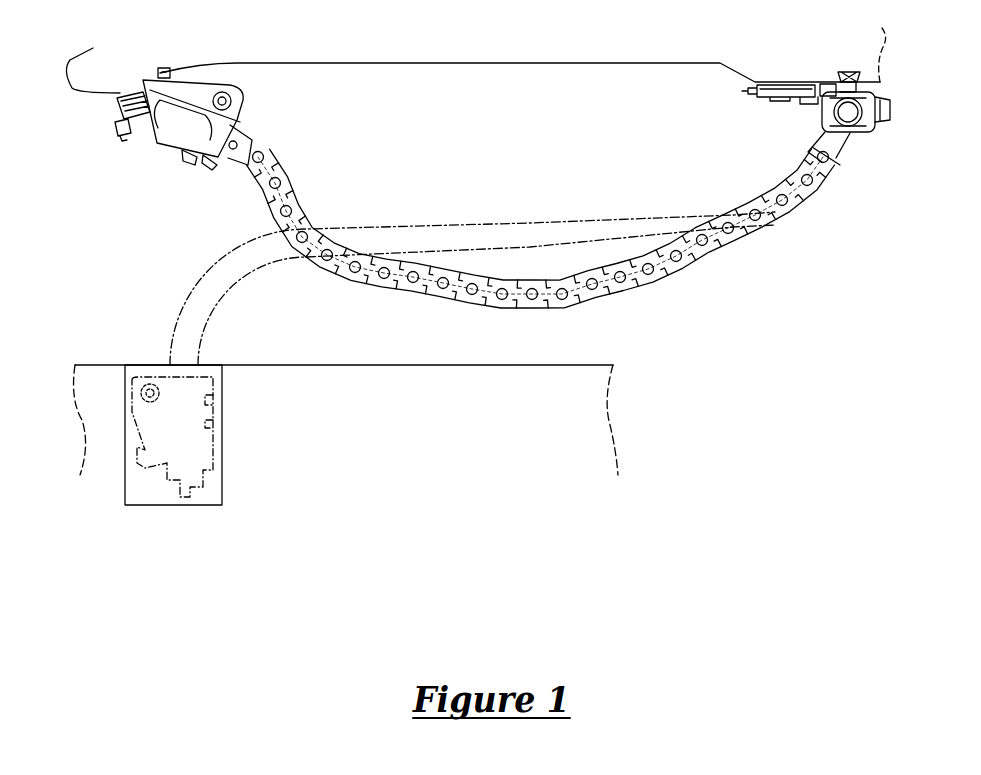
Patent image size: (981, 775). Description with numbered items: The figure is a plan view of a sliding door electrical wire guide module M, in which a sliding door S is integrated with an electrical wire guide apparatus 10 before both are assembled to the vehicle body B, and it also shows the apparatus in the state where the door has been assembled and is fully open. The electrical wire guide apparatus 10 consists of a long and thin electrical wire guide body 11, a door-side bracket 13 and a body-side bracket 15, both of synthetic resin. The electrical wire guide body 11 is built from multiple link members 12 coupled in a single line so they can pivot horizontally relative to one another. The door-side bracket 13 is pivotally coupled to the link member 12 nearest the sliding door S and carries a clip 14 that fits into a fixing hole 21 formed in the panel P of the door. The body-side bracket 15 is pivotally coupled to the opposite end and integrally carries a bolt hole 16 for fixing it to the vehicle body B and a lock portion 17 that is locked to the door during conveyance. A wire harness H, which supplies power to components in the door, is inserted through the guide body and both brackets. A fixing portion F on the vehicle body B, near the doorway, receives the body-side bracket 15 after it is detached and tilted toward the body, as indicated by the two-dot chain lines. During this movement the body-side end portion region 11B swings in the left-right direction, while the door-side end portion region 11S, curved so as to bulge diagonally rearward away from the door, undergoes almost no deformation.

The electrical wire guide apparatus 10 is at (540, 256).
The electrical wire guide body 11 is at (441, 255).
The body-side end portion region 11B is at (286, 177).
The door-side end portion region 11S is at (787, 183).
The link member 12 is at (652, 265).
The door-side bracket 13 is at (798, 101).
The clip 14 is at (848, 71).
The body-side bracket 15 is at (150, 123).
The bolt hole 16 is at (230, 103).
The lock portion 17 is at (165, 66).
The fixing hole 21 is at (833, 92).
The panel P is at (605, 63).
The sliding door S is at (443, 64).
The vehicle body B is at (598, 406).
The fixing portion F is at (143, 506).
The wire harness H is at (665, 280).
The sliding door electrical wire guide module M is at (783, 279).